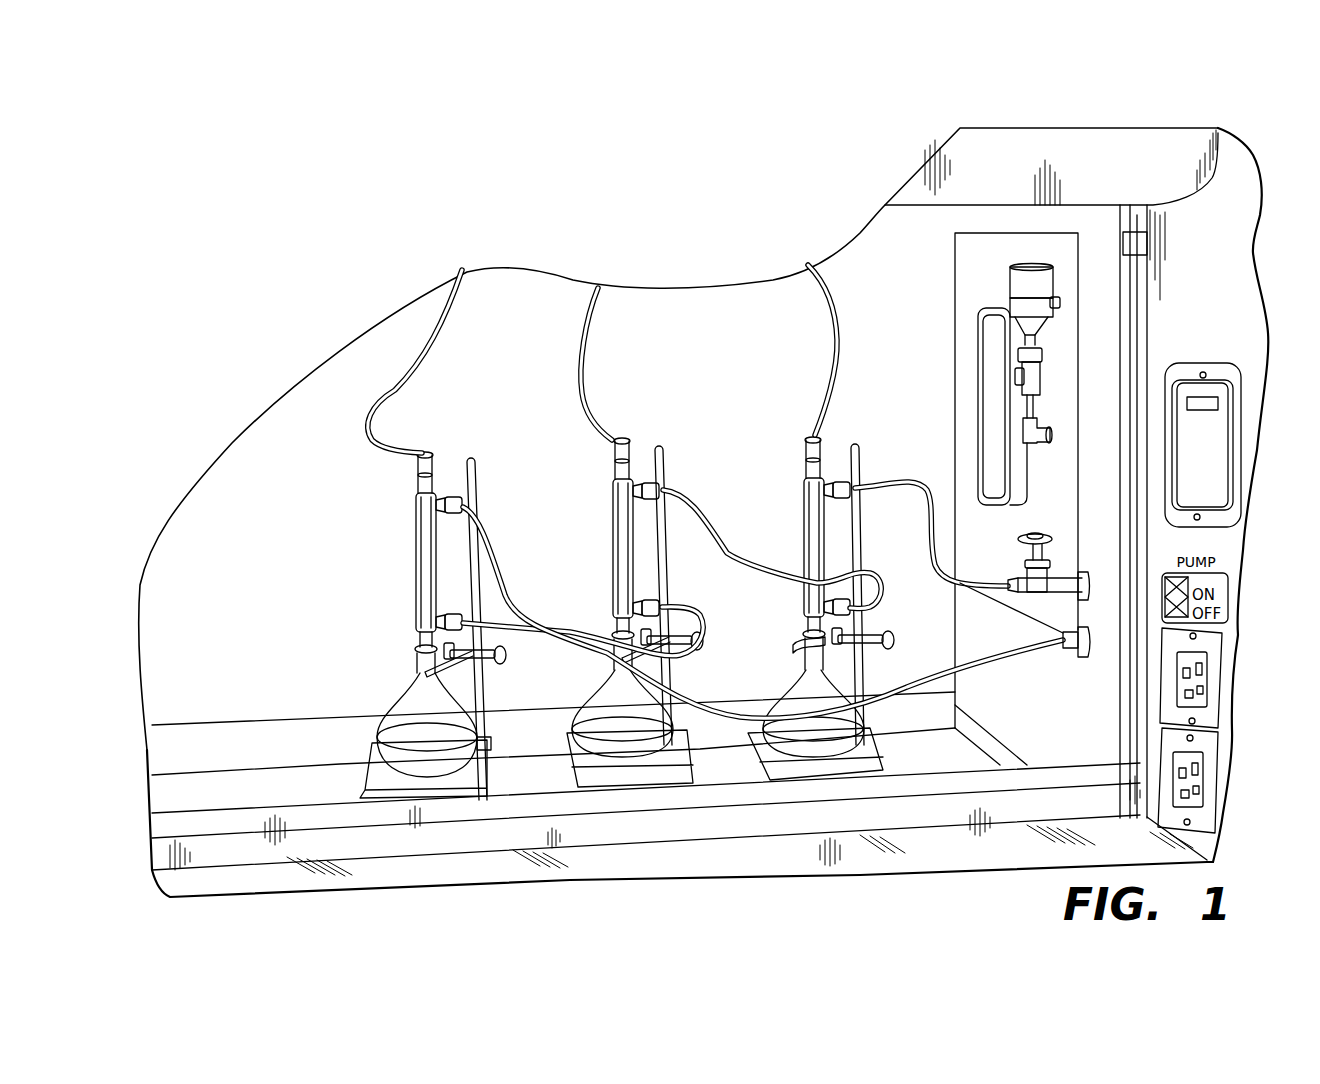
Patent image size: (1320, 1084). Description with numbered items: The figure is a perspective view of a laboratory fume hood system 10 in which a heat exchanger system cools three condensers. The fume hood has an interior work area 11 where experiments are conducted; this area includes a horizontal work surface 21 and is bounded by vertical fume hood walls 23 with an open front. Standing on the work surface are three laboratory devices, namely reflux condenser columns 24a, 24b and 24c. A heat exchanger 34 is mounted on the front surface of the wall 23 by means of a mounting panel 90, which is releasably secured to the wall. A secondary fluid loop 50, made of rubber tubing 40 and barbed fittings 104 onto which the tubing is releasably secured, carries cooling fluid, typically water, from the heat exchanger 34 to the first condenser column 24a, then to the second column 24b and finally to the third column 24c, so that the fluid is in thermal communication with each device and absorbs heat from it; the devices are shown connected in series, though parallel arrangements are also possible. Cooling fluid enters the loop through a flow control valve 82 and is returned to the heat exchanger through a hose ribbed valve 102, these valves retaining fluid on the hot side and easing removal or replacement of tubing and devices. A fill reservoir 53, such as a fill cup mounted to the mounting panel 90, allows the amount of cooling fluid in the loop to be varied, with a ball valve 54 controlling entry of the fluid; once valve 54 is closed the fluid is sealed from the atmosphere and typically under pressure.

The laboratory fume hood system 10 is at (1017, 125).
The interior work area 11 is at (258, 597).
The horizontal work surface 21 is at (921, 759).
The fume hood wall 23 is at (495, 455).
The first reflux condenser column 24a is at (850, 488).
The second reflux condenser column 24b is at (627, 560).
The third reflux condenser column 24c is at (417, 630).
The heat exchanger 34 is at (992, 390).
The tubing 40 is at (748, 550).
The secondary fluid loop 50 is at (927, 677).
The fill reservoir 53 is at (1040, 282).
The valve 54 is at (1033, 367).
The flow control valve 82 is at (1060, 552).
The mounting panel 90 is at (1048, 483).
The hose ribbed valve 102 is at (1075, 653).
The barbed fittings 104 is at (998, 590).